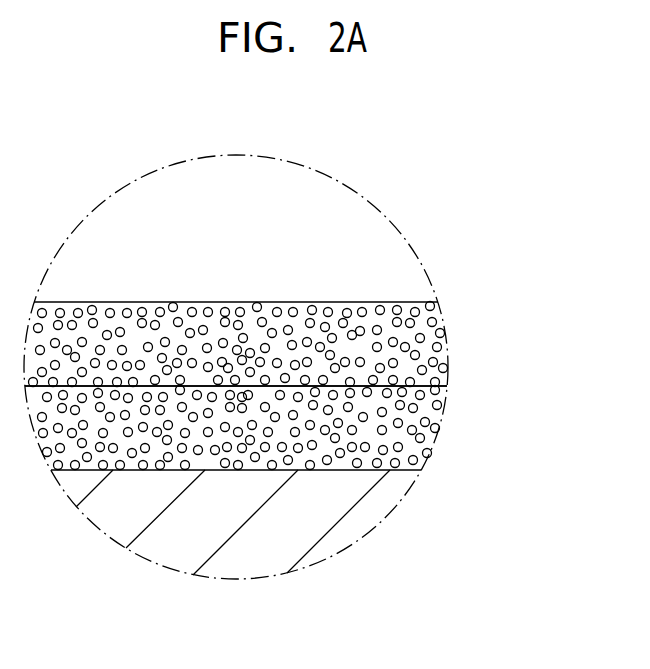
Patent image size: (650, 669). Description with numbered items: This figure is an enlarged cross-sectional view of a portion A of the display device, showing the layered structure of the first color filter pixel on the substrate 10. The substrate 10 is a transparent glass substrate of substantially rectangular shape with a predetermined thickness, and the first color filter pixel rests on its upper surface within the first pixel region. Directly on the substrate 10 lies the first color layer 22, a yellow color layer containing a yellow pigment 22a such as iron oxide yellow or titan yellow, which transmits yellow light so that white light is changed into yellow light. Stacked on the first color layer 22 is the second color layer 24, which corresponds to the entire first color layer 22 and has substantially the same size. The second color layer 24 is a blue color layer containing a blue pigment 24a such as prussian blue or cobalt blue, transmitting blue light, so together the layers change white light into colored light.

The portion A is at (233, 156).
The substrate 10 is at (398, 488).
The first color layer 22 is at (465, 399).
The yellow pigment 22a is at (444, 418).
The second color layer 24 is at (462, 306).
The blue pigment 24a is at (445, 323).